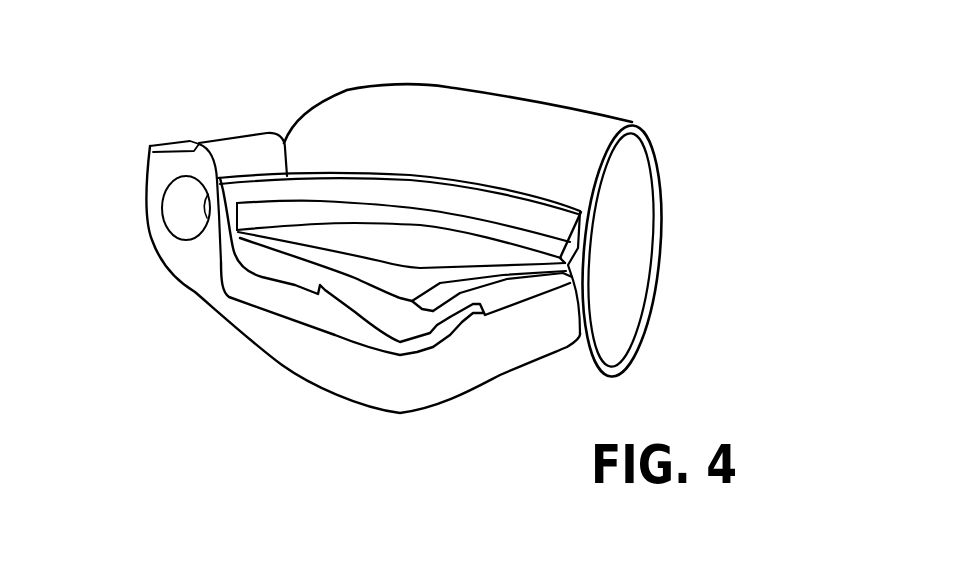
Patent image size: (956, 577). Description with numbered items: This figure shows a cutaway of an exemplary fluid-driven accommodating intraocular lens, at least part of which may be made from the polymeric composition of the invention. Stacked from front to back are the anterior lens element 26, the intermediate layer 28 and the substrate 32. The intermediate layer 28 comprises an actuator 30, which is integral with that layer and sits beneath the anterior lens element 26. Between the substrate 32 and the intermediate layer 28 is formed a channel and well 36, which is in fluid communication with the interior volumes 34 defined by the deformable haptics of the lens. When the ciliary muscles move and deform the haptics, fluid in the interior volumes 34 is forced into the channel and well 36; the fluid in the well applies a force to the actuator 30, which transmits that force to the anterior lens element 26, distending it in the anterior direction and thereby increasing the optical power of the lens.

The anterior lens element 26 is at (497, 233).
The intermediate layer 28 is at (547, 282).
The actuator 30 is at (420, 355).
The substrate 32 is at (500, 380).
The interior volumes 34 is at (631, 263).
The channel and well 36 is at (325, 313).